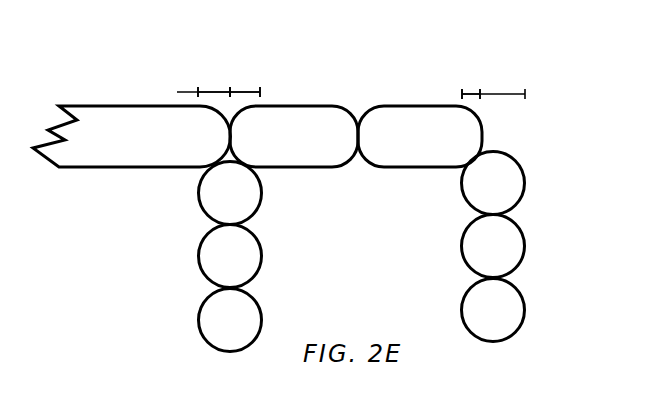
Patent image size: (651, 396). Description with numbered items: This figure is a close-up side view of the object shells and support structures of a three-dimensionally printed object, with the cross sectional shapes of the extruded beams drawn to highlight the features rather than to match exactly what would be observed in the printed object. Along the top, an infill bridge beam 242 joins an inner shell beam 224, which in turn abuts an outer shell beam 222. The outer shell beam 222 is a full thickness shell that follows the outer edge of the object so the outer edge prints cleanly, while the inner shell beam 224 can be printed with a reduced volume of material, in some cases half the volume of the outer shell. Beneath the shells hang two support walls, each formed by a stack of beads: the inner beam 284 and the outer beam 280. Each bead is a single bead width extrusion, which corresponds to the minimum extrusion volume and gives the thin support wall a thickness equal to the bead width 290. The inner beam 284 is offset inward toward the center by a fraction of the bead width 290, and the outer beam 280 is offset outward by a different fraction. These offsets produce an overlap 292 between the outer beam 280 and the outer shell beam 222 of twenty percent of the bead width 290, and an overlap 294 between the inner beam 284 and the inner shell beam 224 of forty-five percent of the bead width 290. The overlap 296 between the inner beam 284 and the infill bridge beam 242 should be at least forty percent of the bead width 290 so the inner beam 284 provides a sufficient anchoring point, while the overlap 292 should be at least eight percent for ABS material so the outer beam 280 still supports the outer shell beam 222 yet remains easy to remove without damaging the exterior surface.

The infill bridge beam 242 is at (88, 106).
The inner shell beam 224 is at (268, 107).
The outer shell beam 222 is at (436, 107).
The inner beam 284 is at (198, 192).
The outer beam 280 is at (527, 190).
The bead width 290 is at (177, 92).
The overlap 296 is at (222, 92).
The overlap 294 is at (250, 92).
The overlap 292 is at (472, 94).